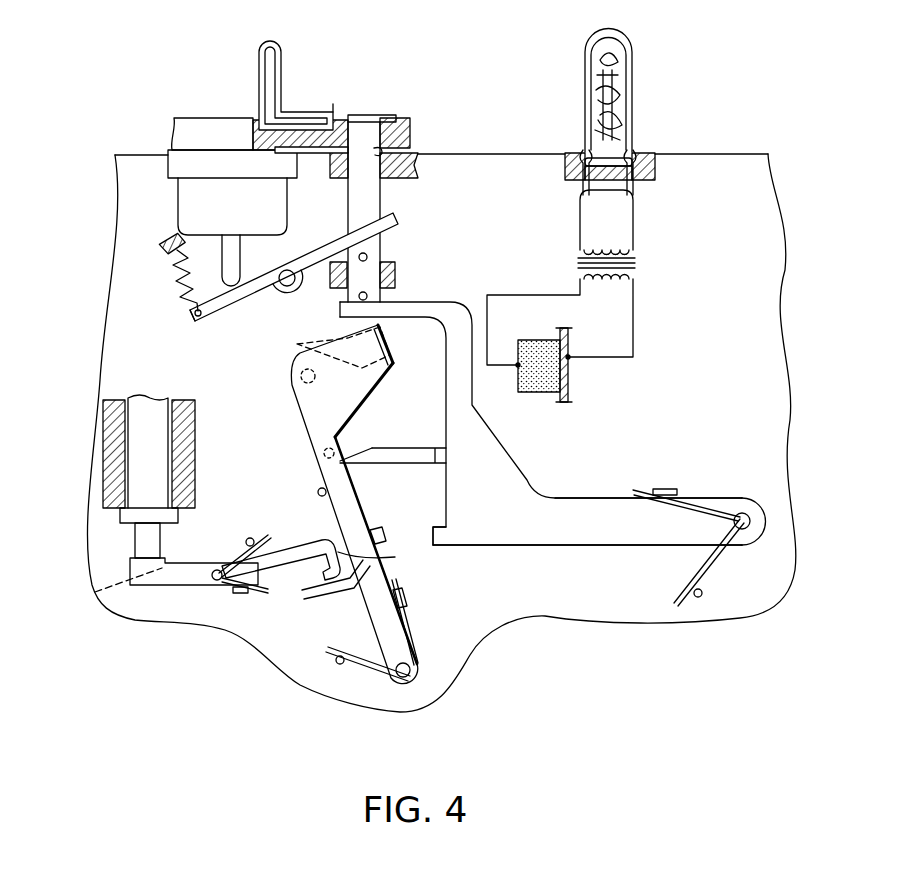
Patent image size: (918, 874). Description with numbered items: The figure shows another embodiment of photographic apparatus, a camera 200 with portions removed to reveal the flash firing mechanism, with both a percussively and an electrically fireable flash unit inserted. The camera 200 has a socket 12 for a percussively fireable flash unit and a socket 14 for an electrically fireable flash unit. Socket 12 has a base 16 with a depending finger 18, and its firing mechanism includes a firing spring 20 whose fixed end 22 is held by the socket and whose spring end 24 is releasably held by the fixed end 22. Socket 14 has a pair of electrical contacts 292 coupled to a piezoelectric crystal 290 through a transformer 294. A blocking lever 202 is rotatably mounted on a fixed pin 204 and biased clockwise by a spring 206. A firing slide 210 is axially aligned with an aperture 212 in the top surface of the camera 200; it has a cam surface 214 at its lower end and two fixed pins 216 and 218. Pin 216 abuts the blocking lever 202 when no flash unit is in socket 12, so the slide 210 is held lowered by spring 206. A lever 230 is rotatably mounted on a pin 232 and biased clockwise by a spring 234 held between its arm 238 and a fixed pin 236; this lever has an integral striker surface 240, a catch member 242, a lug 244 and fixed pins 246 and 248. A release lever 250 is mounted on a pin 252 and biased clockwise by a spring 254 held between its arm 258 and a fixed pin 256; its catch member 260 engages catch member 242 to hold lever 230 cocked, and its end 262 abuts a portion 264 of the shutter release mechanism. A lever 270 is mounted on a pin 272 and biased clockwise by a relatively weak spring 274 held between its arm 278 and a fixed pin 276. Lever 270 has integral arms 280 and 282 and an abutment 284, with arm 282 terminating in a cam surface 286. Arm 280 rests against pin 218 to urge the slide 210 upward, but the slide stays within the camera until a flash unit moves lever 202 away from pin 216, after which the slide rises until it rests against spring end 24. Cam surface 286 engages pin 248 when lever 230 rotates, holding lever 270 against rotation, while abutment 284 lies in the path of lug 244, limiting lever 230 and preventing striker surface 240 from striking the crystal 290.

The socket 12 is at (197, 118).
The socket 14 is at (585, 132).
The base 16 is at (181, 200).
The depending finger 18 is at (231, 240).
The firing spring 20 is at (282, 50).
The fixed end 22 is at (333, 112).
The spring end 24 is at (368, 115).
The camera 200 is at (696, 168).
The blocking lever 202 is at (213, 320).
The fixed pin 204 is at (286, 288).
The spring 206 is at (176, 258).
The firing slide 210 is at (356, 192).
The aperture 212 is at (384, 151).
The cam surface 214 is at (297, 344).
The fixed pin 216 is at (367, 257).
The fixed pin 218 is at (359, 296).
The lever 230 is at (385, 625).
The pin 232 is at (408, 674).
The spring 234 is at (366, 686).
The fixed pin 236 is at (337, 665).
The arm 238 is at (406, 599).
The striker surface 240 is at (392, 348).
The catch member 242 is at (328, 590).
The lug 244 is at (383, 533).
The fixed pin 246 is at (300, 379).
The fixed pin 248 is at (324, 454).
The release lever 250 is at (292, 560).
The pin 252 is at (219, 581).
The spring 254 is at (241, 557).
The fixed pin 256 is at (248, 538).
The arm 258 is at (240, 593).
The catch member 260 is at (395, 557).
The end 262 is at (100, 590).
The portion of the shutter release mechanism 264 is at (150, 545).
The lever 270 is at (565, 525).
The pin 272 is at (752, 512).
The spring 274 is at (715, 565).
The fixed pin 276 is at (703, 595).
The arm 278 is at (655, 490).
The arm 280 is at (404, 301).
The arm 282 is at (410, 450).
The abutment 284 is at (440, 546).
The cam surface 286 is at (345, 456).
The piezoelectric crystal 290 is at (528, 343).
The electrical contacts 292 is at (582, 150).
The transformer 294 is at (652, 267).